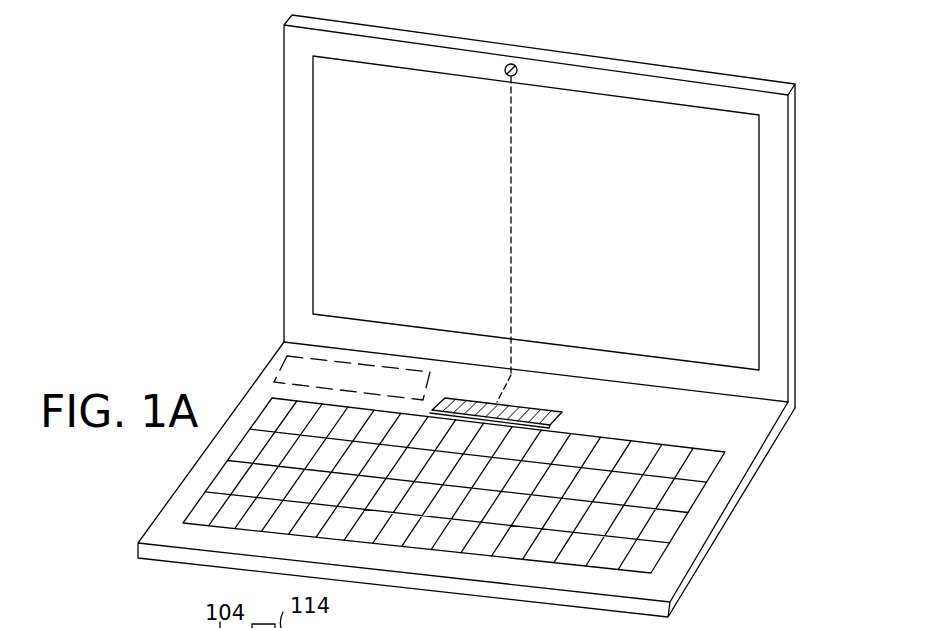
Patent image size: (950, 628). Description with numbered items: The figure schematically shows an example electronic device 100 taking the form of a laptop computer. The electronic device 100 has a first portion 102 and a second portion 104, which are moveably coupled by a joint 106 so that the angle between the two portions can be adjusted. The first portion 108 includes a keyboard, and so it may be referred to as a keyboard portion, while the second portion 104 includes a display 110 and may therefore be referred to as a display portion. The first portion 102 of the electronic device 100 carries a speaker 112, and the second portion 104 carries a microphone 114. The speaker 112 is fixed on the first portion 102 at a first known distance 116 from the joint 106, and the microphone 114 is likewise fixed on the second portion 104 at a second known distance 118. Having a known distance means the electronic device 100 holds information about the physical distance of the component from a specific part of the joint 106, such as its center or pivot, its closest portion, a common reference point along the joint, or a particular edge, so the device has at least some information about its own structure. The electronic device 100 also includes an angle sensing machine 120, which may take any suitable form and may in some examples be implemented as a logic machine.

The electronic device 100 is at (143, 66).
The first portion 102 is at (175, 563).
The second portion 104 is at (283, 79).
The joint 106 is at (262, 338).
The first portion 108 is at (685, 532).
The display 110 is at (760, 155).
The speaker 112 is at (562, 417).
The microphone 114 is at (518, 70).
The first known distance 116 is at (500, 389).
The second known distance 118 is at (508, 301).
The angle sensing machine 120 is at (376, 367).